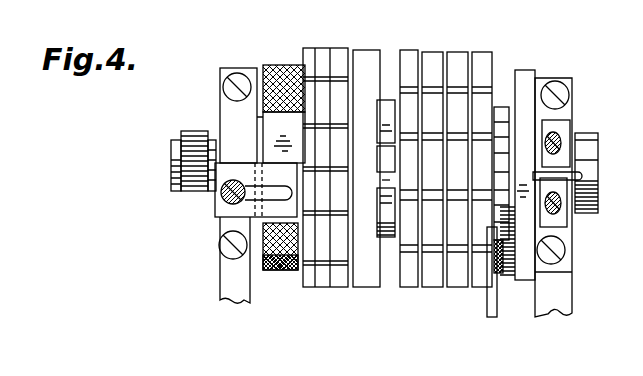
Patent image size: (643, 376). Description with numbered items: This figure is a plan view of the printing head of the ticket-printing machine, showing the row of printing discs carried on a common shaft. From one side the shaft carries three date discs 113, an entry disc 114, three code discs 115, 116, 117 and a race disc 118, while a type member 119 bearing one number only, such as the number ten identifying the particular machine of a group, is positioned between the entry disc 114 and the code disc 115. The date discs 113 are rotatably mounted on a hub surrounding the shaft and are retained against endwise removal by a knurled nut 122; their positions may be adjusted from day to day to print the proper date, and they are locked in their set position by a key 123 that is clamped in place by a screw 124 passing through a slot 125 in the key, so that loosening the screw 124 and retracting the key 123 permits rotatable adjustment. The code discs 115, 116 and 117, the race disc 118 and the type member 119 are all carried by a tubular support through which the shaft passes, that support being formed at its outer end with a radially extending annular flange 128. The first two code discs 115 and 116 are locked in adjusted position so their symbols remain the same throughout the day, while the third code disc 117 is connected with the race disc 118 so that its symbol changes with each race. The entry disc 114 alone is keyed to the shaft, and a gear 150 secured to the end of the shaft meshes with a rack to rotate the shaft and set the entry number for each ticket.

The gear 150 is at (191, 131).
The knurled nut 122 is at (278, 272).
The key 123 is at (228, 208).
The screw 124 is at (221, 198).
The slot 125 is at (268, 192).
The date discs 113 is at (336, 310).
The entry disc 114 is at (368, 288).
The type member 119 is at (387, 100).
The code disc 115 is at (409, 48).
The code disc 116 is at (428, 288).
The code disc 117 is at (458, 50).
The race disc 118 is at (476, 290).
The annular flange 128 is at (523, 72).